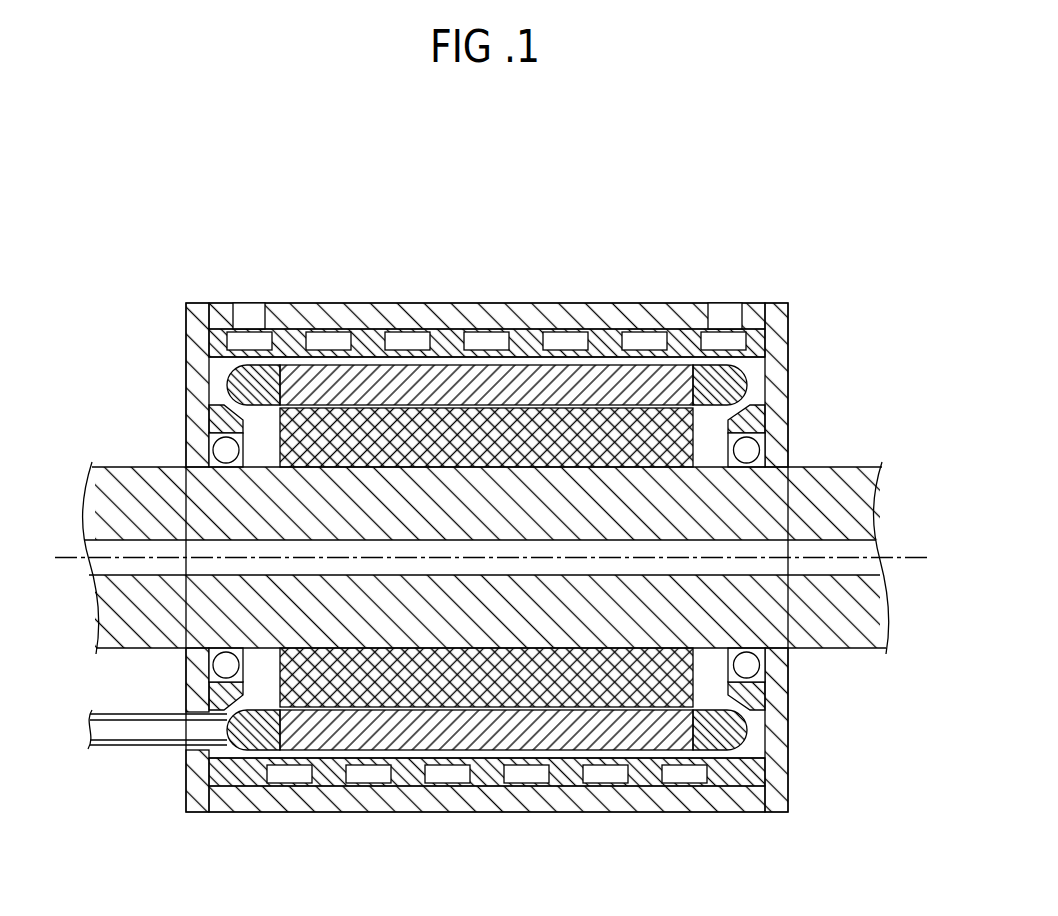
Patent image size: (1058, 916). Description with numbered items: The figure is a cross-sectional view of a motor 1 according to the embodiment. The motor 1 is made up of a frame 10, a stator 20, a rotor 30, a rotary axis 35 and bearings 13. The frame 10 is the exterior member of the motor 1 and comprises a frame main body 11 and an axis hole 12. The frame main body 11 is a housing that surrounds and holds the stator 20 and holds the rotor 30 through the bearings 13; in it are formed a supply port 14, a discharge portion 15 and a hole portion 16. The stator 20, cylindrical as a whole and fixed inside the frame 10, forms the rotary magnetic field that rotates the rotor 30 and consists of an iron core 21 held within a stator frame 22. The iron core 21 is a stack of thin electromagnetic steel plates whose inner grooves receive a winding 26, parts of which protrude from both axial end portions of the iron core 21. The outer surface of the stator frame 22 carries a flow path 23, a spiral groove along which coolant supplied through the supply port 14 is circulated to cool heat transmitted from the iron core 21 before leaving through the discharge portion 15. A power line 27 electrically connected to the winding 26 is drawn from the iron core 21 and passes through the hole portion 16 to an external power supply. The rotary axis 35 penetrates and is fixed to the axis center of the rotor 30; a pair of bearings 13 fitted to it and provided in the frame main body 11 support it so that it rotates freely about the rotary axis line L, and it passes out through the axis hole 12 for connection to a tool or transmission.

The motor 1 is at (829, 201).
The frame 10 is at (693, 280).
The frame main body 11 is at (756, 302).
The axis hole 12 is at (168, 457).
The bearings 13 is at (206, 421).
The supply port 14 is at (724, 293).
The discharge portion 15 is at (264, 290).
The hole portion 16 is at (171, 705).
The stator 20 is at (246, 328).
The iron core 21 is at (613, 362).
The stator frame 22 is at (455, 330).
The flow path 23 is at (412, 331).
The winding 26 is at (747, 371).
The power line 27 is at (118, 747).
The rotor 30 is at (709, 420).
The rotary axis 35 is at (853, 485).
The rotary axis line L is at (920, 556).